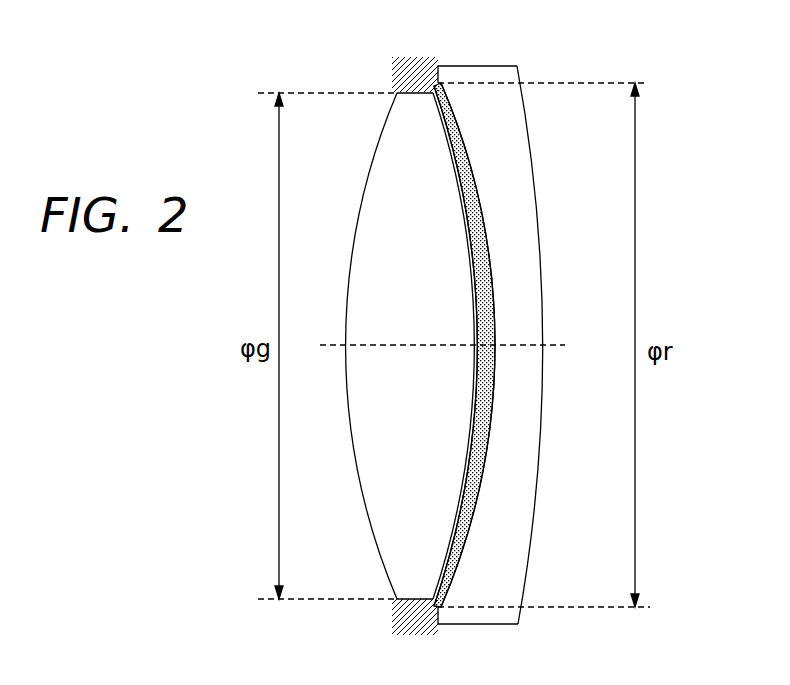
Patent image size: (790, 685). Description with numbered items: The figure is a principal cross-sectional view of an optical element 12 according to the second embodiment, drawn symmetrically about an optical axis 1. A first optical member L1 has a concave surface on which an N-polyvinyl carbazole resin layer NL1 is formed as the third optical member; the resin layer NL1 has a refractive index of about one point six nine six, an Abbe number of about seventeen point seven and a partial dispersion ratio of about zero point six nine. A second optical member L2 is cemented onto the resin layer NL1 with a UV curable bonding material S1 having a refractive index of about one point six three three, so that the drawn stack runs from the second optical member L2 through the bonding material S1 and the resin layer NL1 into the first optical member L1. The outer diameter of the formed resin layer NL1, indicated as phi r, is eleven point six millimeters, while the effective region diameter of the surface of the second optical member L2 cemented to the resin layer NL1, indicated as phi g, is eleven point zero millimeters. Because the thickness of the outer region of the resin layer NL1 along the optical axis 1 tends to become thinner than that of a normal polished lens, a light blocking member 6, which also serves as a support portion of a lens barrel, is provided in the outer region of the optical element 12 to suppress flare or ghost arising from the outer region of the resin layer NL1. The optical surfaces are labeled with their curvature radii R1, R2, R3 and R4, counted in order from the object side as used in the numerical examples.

The optical element 12 is at (667, 80).
The optical axis 1 is at (518, 345).
The light blocking member 6 is at (403, 70).
The first optical member L1 is at (525, 287).
The second optical member L2 is at (382, 182).
The resin layer NL1 is at (483, 237).
The UV curable bonding material S1 is at (458, 173).
The curvature radius of first optical surface R1 is at (365, 507).
The curvature radius of second optical surface R2 is at (457, 530).
The curvature radius of third optical surface R3 is at (470, 533).
The curvature radius of fourth optical surface R4 is at (527, 572).